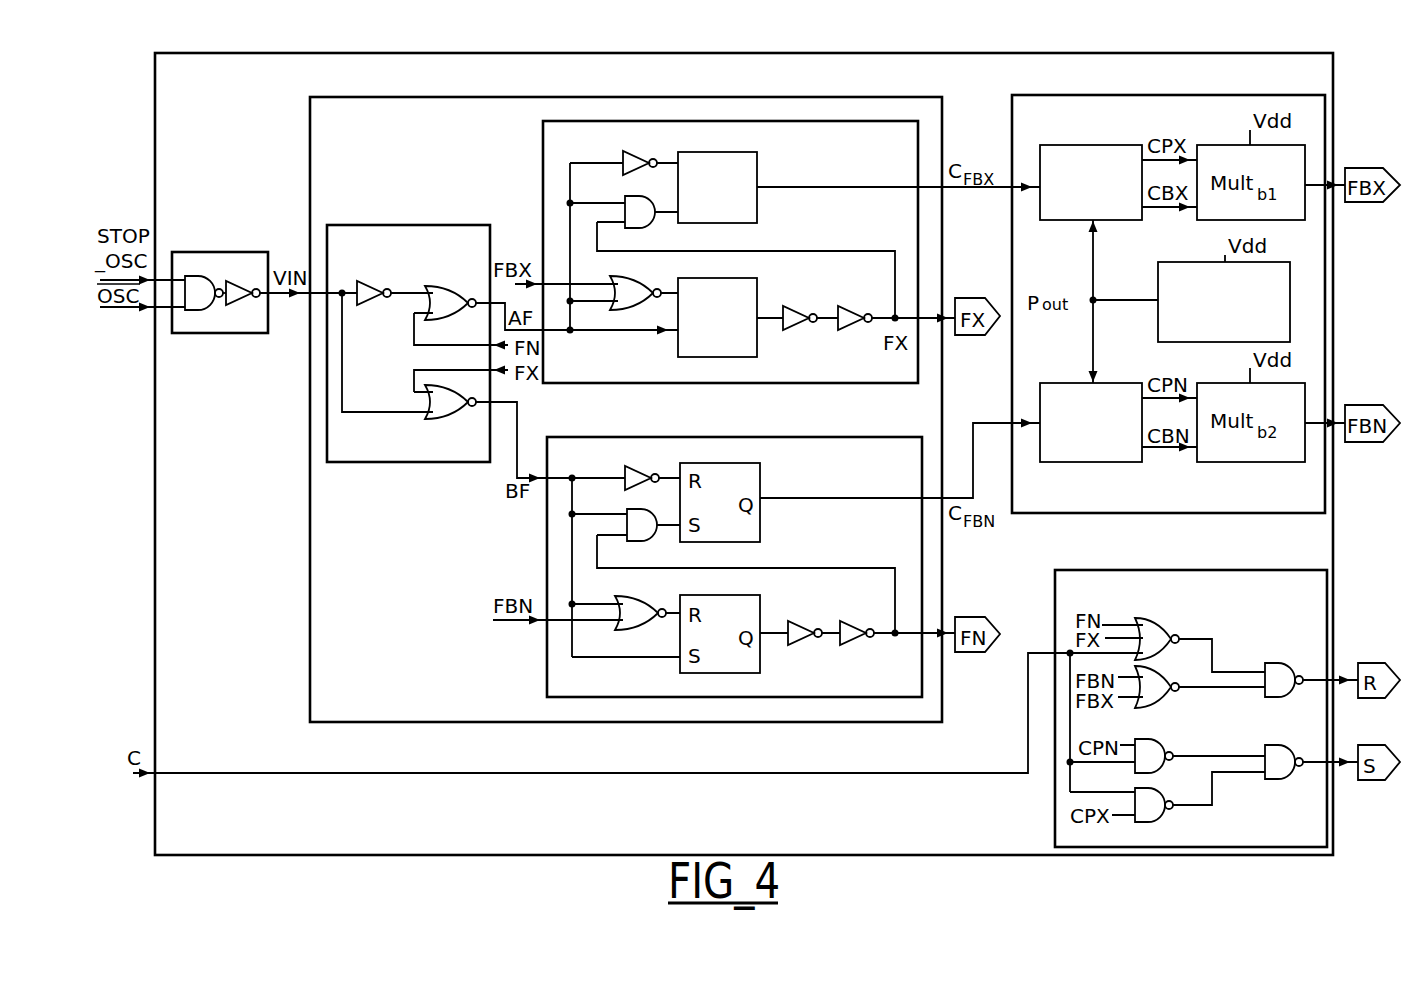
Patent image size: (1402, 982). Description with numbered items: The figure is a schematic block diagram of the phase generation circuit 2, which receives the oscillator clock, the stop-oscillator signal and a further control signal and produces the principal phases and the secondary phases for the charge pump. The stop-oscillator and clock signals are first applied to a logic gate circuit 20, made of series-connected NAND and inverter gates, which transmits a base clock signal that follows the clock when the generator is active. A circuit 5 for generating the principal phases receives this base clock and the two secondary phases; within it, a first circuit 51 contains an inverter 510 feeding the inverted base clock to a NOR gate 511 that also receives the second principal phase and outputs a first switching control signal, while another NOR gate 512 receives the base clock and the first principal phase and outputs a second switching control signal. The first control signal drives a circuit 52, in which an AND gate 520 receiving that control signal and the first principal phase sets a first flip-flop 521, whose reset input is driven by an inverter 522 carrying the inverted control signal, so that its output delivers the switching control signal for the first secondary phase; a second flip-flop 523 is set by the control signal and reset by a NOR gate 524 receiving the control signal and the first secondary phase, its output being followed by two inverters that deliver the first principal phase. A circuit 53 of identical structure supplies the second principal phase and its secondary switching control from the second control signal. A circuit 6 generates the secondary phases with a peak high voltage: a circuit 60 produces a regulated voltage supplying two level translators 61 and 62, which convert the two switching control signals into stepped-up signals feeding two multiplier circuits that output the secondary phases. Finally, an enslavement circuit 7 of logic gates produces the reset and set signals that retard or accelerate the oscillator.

The phase generation circuit 2 is at (157, 685).
The circuit for generating the principal phases 5 is at (308, 128).
The secondary phase generation circuit 6 is at (1090, 513).
The enslavement circuit 7 is at (1240, 570).
The logic gate circuit 20 is at (225, 252).
The first circuit 51 is at (415, 225).
The circuit 52 is at (842, 121).
The circuit 53 is at (830, 437).
The regulated voltage generating circuit 60 is at (1290, 282).
The level translator 61 is at (1090, 145).
The level translator 62 is at (1093, 462).
The inverter 510 is at (365, 283).
The NOR gate 511 is at (432, 286).
The NOR gate 512 is at (440, 420).
The AND gate 520 is at (648, 228).
The first flip-flop 521 is at (760, 158).
The inverter 522 is at (628, 155).
The second flip-flop 523 is at (760, 355).
The NOR gate 524 is at (640, 282).